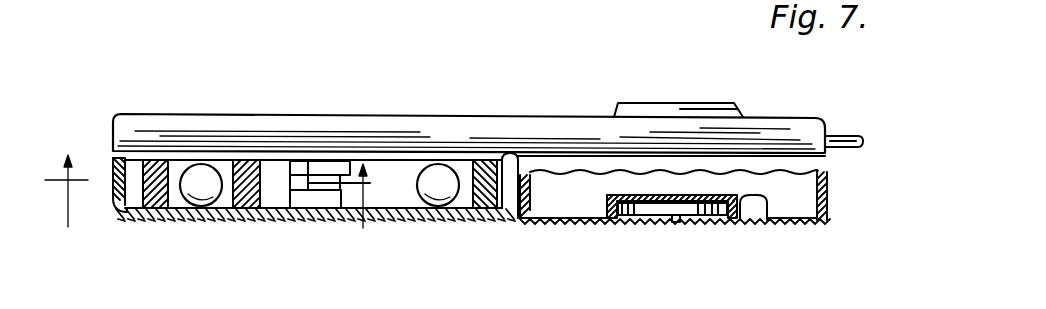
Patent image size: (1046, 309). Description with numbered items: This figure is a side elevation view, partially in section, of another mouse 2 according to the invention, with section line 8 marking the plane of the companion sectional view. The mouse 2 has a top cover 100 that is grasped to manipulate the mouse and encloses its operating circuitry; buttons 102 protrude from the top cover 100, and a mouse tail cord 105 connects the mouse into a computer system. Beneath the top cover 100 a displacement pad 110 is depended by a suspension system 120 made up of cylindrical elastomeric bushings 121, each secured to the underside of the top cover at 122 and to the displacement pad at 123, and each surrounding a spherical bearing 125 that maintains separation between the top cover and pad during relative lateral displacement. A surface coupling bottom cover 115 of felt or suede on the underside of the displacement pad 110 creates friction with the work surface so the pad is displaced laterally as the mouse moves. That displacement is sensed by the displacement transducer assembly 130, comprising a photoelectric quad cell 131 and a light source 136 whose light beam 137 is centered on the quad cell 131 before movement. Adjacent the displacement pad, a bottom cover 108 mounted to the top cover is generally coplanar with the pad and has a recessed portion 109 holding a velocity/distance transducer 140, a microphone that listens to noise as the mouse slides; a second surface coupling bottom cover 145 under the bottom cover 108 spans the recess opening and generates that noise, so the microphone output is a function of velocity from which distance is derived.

The mouse 2 is at (690, 78).
The section line 8- 8 is at (211, 190).
The top cover 100 is at (430, 113).
The buttons 102 is at (733, 102).
The mouse tail cord 105 is at (862, 112).
The bottom cover 108 is at (826, 191).
The recessed portion 109 is at (758, 221).
The displacement pad 110 is at (228, 222).
The surface coupling bottom cover 115 is at (333, 200).
The suspension system 120 is at (132, 185).
The elastomeric bushings 121 is at (150, 162).
The upper surface joinder 122 is at (244, 178).
The bottom surface joinder 123 is at (158, 213).
The spherical bearing 125 is at (205, 166).
The displacement transducer assembly 130 is at (278, 188).
The photoelectric quad cell 131 is at (332, 165).
The light source 136 is at (342, 206).
The light beam 137 is at (297, 177).
The velocity/distance transducer 140 is at (676, 223).
The surface coupling bottom cover 145 is at (640, 220).